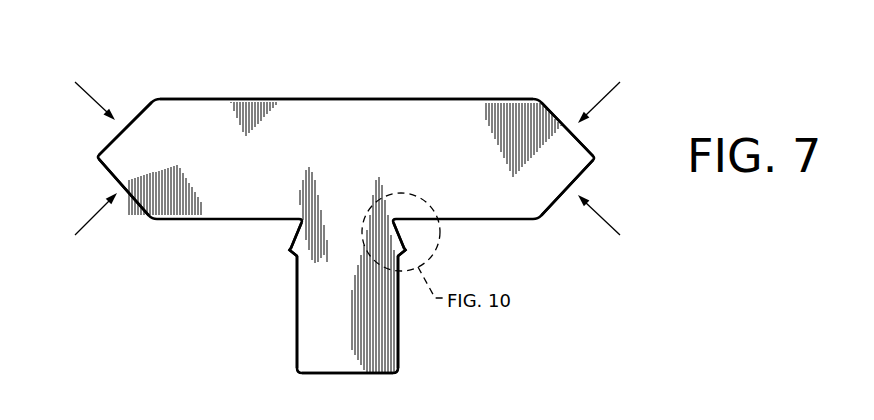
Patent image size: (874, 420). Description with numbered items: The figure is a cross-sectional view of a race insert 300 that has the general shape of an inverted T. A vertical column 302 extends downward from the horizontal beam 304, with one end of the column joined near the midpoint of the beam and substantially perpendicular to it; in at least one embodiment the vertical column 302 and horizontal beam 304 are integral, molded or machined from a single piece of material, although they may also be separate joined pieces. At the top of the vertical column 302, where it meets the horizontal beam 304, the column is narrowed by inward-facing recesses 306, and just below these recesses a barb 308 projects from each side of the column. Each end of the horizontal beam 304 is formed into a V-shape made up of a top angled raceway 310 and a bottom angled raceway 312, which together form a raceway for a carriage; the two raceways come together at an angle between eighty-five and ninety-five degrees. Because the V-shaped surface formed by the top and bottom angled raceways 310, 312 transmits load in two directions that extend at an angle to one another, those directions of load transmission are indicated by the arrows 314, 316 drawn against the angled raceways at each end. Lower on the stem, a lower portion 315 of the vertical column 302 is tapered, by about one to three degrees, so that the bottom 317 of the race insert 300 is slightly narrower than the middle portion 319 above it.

The race insert 300 is at (165, 48).
The vertical column 302 is at (398, 335).
The horizontal beam 304 is at (432, 98).
The inward-facing recesses 306 is at (275, 229).
The barb 308 is at (290, 250).
The top angled raceway 310 is at (141, 112).
The bottom angled raceway 312 is at (140, 207).
The arrow 314 is at (84, 96).
The lower portion 315 is at (297, 340).
The arrow 316 is at (82, 224).
The bottom 317 is at (322, 375).
The middle portion 319 is at (295, 298).